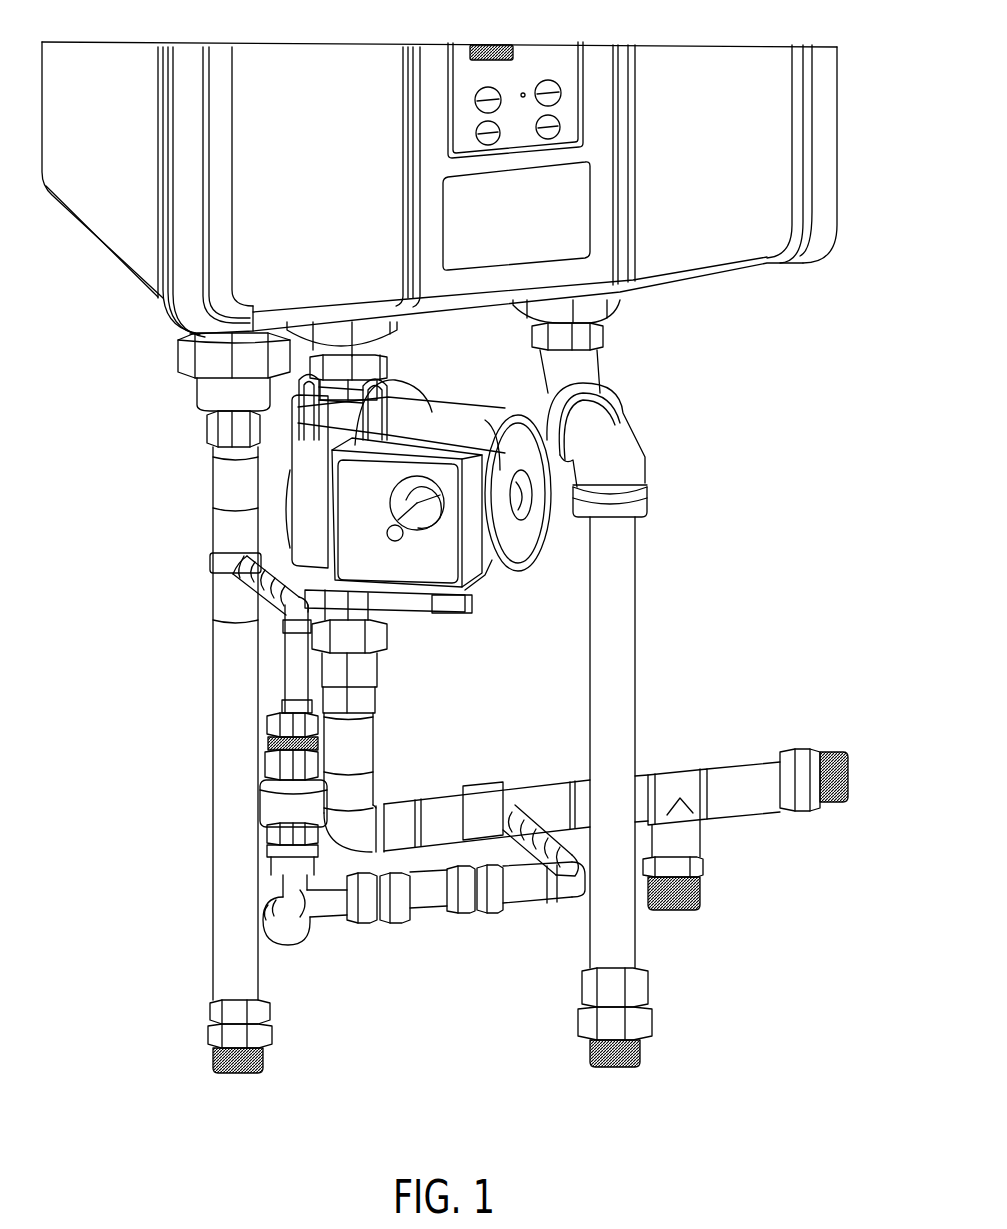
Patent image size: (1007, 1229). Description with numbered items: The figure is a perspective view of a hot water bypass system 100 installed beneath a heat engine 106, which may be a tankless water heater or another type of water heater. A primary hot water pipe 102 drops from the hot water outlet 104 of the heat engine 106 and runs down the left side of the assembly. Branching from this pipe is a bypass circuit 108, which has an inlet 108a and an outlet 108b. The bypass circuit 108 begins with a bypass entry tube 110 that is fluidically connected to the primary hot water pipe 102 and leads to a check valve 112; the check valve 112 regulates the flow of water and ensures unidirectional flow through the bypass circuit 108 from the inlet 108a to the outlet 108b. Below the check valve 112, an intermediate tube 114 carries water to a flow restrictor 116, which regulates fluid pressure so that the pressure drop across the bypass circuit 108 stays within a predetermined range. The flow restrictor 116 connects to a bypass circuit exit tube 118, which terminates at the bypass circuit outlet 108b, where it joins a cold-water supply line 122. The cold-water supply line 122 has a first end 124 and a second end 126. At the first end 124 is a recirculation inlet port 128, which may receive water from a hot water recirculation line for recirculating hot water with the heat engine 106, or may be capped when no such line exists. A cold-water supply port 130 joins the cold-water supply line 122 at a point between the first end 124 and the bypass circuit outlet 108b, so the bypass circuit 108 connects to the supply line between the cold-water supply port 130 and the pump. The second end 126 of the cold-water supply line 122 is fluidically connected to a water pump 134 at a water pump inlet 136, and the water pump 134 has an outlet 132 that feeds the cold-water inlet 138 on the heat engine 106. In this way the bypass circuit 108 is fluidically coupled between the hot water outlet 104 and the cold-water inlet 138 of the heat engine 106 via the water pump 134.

The hot water bypass system 100 is at (805, 522).
The primary hot water pipe 102 is at (213, 503).
The hot water outlet 104 is at (202, 387).
The heat engine 106 is at (143, 233).
The bypass circuit 108 is at (347, 920).
The inlet 108a is at (240, 595).
The outlet 108b is at (532, 790).
The bypass entry tube 110 is at (282, 625).
The check valve 112 is at (260, 820).
The intermediate tube 114 is at (290, 950).
The flow restrictor 116 is at (420, 907).
The bypass circuit exit tube 118 is at (530, 893).
The cold-water supply line 122 is at (457, 803).
The first end 124 is at (837, 748).
The second end 126 is at (385, 675).
The recirculation inlet port 128 is at (853, 770).
The cold-water supply port 130 is at (677, 913).
The outlet 132 is at (233, 438).
The water pump 134 is at (540, 473).
The water pump inlet 136 is at (230, 557).
The cold-water inlet 138 is at (387, 325).